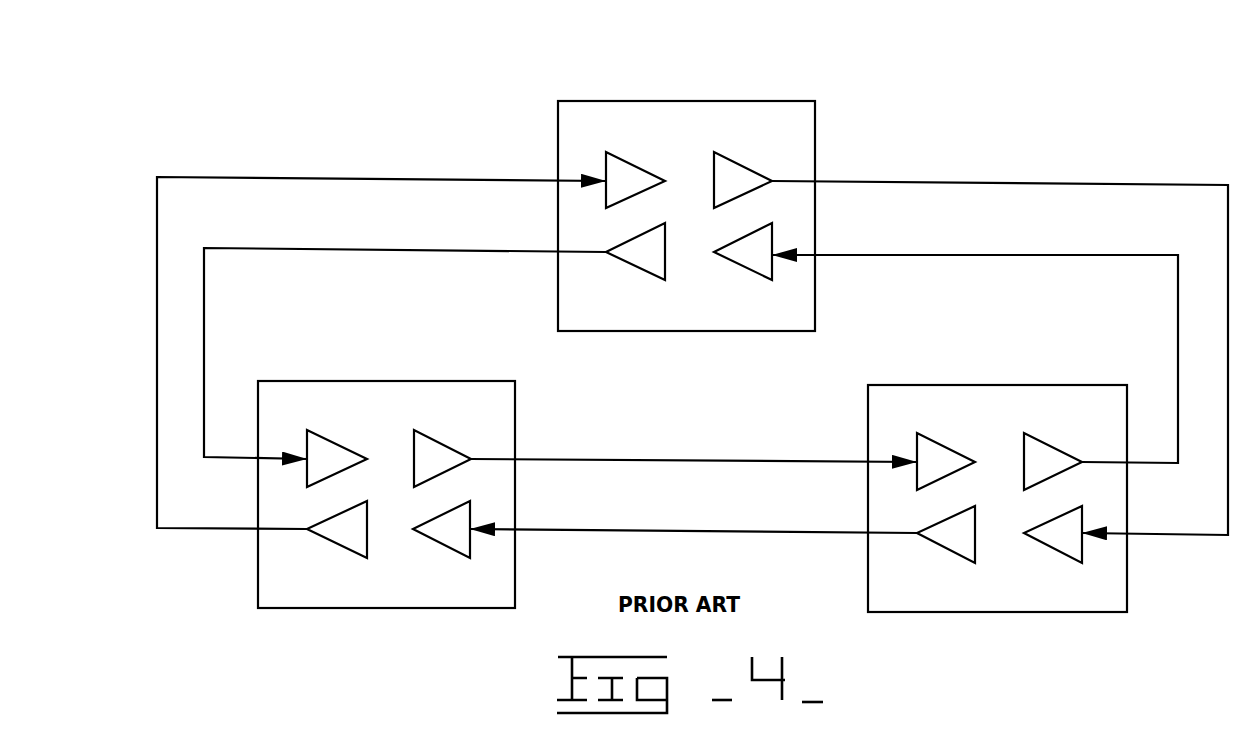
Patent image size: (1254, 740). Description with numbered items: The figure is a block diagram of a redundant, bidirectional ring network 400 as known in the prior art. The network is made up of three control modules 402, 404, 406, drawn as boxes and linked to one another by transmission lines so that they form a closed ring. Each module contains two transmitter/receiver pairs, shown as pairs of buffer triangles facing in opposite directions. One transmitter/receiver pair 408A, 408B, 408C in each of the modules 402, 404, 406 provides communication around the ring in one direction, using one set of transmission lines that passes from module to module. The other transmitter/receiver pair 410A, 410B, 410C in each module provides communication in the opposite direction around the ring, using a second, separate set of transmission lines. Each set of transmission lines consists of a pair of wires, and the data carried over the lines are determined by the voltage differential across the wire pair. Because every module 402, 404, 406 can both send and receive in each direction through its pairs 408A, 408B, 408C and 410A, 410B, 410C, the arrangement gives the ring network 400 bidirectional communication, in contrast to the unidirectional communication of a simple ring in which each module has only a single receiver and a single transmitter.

The bidirectional ring network 400 is at (395, 87).
The control module 402 is at (409, 608).
The control module 404 is at (1020, 612).
The control module 406 is at (717, 331).
The transmitter/receiver pair 408A is at (403, 421).
The transmitter/receiver pair 408B is at (1016, 420).
The transmitter/receiver pair 408C is at (697, 272).
The transmitter/receiver pair 410A is at (392, 546).
The transmitter/receiver pair 410B is at (1018, 553).
The transmitter/receiver pair 410C is at (697, 142).